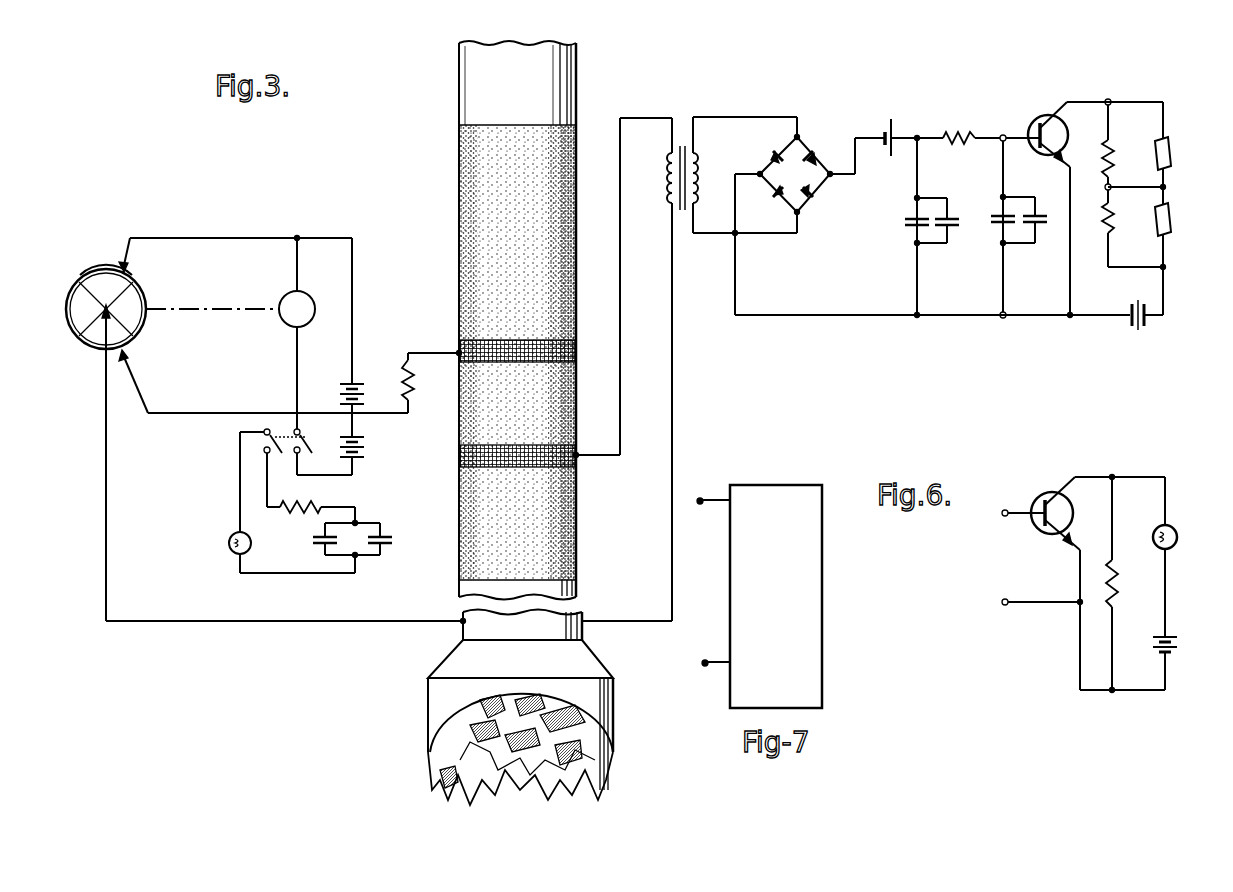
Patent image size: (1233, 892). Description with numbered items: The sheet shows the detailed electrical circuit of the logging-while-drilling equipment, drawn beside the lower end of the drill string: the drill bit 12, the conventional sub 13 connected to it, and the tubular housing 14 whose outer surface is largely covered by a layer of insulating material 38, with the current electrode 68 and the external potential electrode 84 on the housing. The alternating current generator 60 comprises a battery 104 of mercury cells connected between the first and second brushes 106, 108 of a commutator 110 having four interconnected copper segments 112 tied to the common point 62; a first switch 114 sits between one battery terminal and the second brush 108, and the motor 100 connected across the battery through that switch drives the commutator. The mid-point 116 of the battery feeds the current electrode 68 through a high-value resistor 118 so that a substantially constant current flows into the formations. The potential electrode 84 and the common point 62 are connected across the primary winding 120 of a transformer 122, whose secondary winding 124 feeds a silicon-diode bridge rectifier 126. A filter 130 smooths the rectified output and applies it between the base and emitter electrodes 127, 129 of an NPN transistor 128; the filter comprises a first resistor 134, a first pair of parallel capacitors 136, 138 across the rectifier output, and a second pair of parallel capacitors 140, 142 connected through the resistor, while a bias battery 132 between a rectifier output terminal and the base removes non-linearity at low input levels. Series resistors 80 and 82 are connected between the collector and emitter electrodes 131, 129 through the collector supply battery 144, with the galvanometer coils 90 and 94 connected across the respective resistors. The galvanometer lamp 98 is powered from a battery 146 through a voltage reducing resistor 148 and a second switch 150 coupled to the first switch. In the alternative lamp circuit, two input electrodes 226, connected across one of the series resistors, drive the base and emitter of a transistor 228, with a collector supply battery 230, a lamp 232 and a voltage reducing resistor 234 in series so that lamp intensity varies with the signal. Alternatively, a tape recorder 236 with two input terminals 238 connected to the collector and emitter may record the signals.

In FIG. 3, the drill bit 12 is at (618, 720).
In FIG. 3, the conventional sub 13 is at (580, 592).
In FIG. 3, the tubular housing 14 is at (458, 75).
In FIG. 3, the layer of insulating material 38 is at (459, 165).
In FIG. 3, the alternating current generator 60 is at (396, 320).
In FIG. 3, the common point 62 is at (560, 621).
In FIG. 3, the current electrode 68 is at (480, 335).
In FIG. 3, the external potential electrode 84 is at (462, 443).
In FIG. 3, the series resistor 80 is at (1113, 152).
In FIG. 3, the series resistor 82 is at (1135, 223).
In FIG. 3, the coil of the first galvanometer 90 is at (1170, 148).
In FIG. 3, the coil of the second galvanometer 94 is at (1170, 212).
In FIG. 3, the galvanometer lamp 98 is at (228, 542).
In FIG. 3, the motor 100 is at (310, 287).
In FIG. 3, the battery 104 is at (356, 382).
In FIG. 3, the first brush 106 is at (133, 268).
In FIG. 3, the second brush 108 is at (127, 352).
In FIG. 3, the commutator 110 is at (100, 257).
In FIG. 3, the copper segments 112 is at (70, 288).
In FIG. 3, the first switch 114 is at (316, 444).
In FIG. 3, the mid-point of battery 116 is at (342, 413).
In FIG. 3, the resistor 118 is at (412, 380).
In FIG. 3, the primary winding 120 is at (668, 190).
In FIG. 3, the transformer 122 is at (692, 220).
In FIG. 3, the secondary winding 124 is at (700, 163).
In FIG. 3, the bridge rectifier 126 is at (800, 184).
In FIG. 3, the base electrode 127 is at (1032, 128).
In FIG. 3, the transistor 128 is at (1046, 113).
In FIG. 3, the emitter electrode 129 is at (1042, 152).
In FIG. 3, the filter 130 is at (965, 166).
In FIG. 3, the collector electrode 131 is at (1056, 126).
In FIG. 3, the bias battery 132 is at (886, 117).
In FIG. 3, the first resistor 134 is at (955, 131).
In FIG. 3, the capacitor 136 is at (904, 238).
In FIG. 3, the capacitor 138 is at (958, 208).
In FIG. 3, the capacitor 140 is at (992, 232).
In FIG. 3, the capacitor 142 is at (1046, 226).
In FIG. 3, the collector supply battery 144 is at (1142, 329).
In FIG. 3, the battery 146 is at (378, 516).
In FIG. 3, the voltage reducing resistor 148 is at (293, 516).
In FIG. 3, the second switch 150 is at (278, 460).
In FIG. 6, the input electrodes 226 is at (1005, 508).
In FIG. 6, the transistor 228 is at (1038, 528).
In FIG. 6, the collector supply battery 230 is at (1182, 625).
In FIG. 6, the lamp 232 is at (1178, 533).
In FIG. 6, the voltage reducing resistor 234 is at (1120, 585).
In FIG. 7, the tape recorder 236 is at (815, 572).
In FIG. 7, the input terminals 238 is at (701, 497).